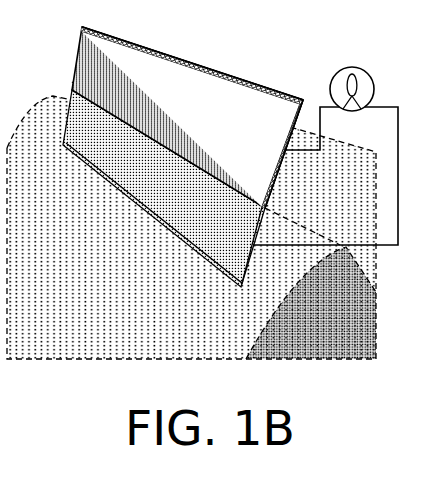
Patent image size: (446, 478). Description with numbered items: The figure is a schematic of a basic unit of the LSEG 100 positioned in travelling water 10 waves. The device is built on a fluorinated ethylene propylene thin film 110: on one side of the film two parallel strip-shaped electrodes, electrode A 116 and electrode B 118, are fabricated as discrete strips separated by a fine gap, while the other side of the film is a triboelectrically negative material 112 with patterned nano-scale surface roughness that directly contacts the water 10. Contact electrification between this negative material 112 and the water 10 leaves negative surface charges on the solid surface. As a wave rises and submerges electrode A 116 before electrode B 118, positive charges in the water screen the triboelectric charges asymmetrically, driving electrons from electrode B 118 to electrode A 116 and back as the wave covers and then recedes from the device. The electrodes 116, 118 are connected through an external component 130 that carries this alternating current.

The water 10 is at (36, 113).
The LSEG 100 is at (169, 143).
The fluorinated ethylene propylene (FEP) thin film 110 is at (187, 62).
The triboelectrically negative material 112 is at (256, 62).
The electrode A 116 is at (143, 58).
The electrode B 118 is at (68, 100).
The power source 130 is at (350, 68).